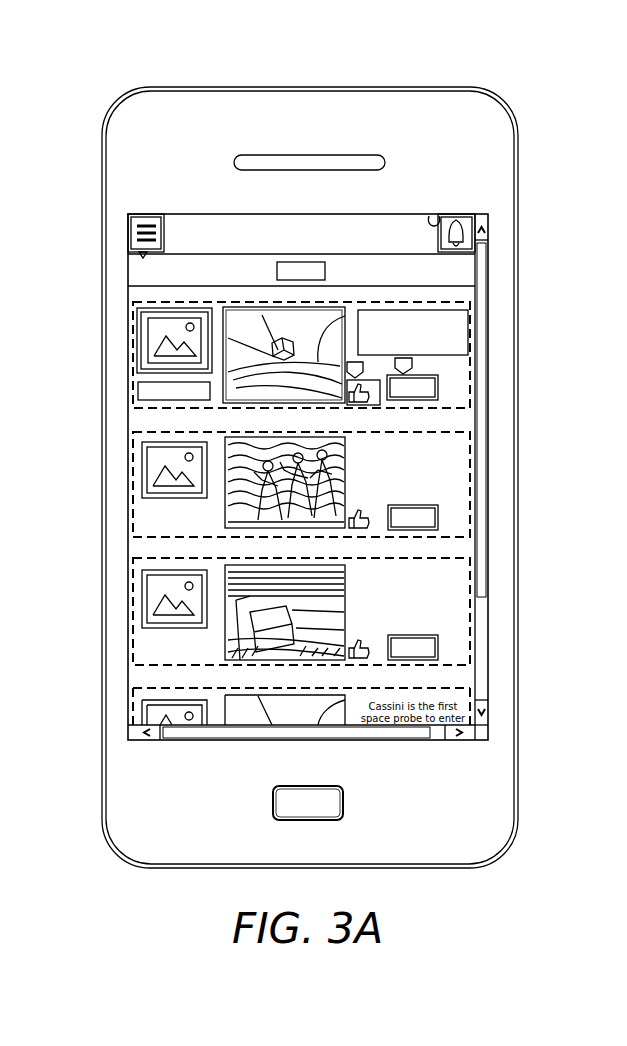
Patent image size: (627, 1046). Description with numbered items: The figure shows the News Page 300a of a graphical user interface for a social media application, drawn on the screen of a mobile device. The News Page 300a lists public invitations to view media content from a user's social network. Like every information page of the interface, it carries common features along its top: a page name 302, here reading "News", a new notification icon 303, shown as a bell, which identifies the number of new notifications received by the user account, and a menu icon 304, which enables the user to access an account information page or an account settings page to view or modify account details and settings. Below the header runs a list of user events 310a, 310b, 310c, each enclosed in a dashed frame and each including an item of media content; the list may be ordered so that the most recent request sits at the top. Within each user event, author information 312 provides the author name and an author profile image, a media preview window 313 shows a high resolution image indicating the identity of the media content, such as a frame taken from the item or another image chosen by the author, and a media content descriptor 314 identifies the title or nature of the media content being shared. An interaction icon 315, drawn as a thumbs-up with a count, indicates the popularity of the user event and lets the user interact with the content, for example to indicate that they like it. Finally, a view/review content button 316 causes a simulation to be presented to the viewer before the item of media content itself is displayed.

The News Page 300a is at (511, 101).
The page name 302 is at (300, 260).
The new notification icon 303 is at (440, 226).
The menu icon 304 is at (165, 237).
The user event 310a is at (133, 400).
The user event 310b is at (133, 533).
The user event 310c is at (133, 660).
The author information 312 is at (137, 324).
The media preview window 313 is at (245, 306).
The media content descriptor 314 is at (470, 326).
The interaction icon 315 is at (380, 405).
The view/review content button 316 is at (440, 388).